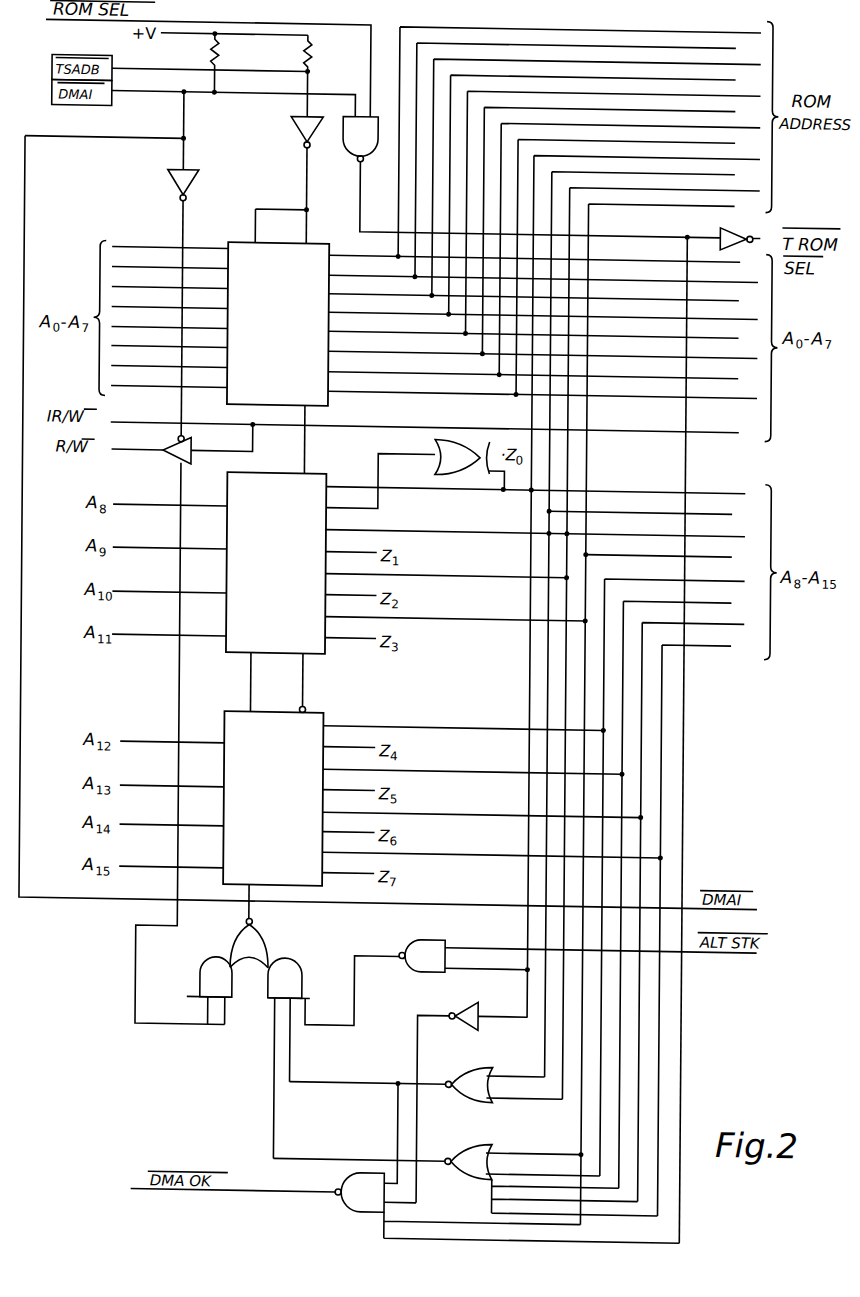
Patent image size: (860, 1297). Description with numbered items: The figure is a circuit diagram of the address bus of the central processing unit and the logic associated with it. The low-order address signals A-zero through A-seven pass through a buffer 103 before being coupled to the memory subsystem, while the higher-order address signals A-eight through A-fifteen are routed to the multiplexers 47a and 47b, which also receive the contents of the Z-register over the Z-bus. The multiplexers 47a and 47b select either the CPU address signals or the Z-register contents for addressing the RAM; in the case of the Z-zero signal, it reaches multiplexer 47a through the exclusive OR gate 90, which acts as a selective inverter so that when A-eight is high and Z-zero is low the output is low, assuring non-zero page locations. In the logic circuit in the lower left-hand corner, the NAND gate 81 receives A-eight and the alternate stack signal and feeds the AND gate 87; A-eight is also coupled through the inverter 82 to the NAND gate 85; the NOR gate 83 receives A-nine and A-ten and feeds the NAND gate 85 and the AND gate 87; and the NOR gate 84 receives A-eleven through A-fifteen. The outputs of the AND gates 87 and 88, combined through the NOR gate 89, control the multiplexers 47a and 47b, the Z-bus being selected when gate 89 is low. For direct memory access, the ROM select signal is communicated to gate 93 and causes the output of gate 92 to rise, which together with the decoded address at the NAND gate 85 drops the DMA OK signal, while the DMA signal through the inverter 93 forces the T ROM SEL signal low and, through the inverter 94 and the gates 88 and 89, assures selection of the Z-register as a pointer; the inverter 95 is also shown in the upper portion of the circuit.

The NAND gate 81 is at (425, 941).
The inverter 82 is at (466, 1009).
The NOR gate 83 is at (471, 1073).
The NOR gate 84 is at (474, 1148).
The NAND gate 85 is at (368, 1209).
The AND gate 87 is at (297, 970).
The AND gate 88 is at (207, 968).
The NOR gate 89 is at (262, 942).
The exclusive OR gate 90 is at (455, 452).
The gate 92 is at (349, 144).
The inverter 93 is at (721, 224).
The inverter 94 is at (197, 185).
The inverter 95 is at (292, 129).
The buffer 103 is at (278, 324).
The multiplexer 47a is at (276, 563).
The multiplexer 47b is at (273, 798).